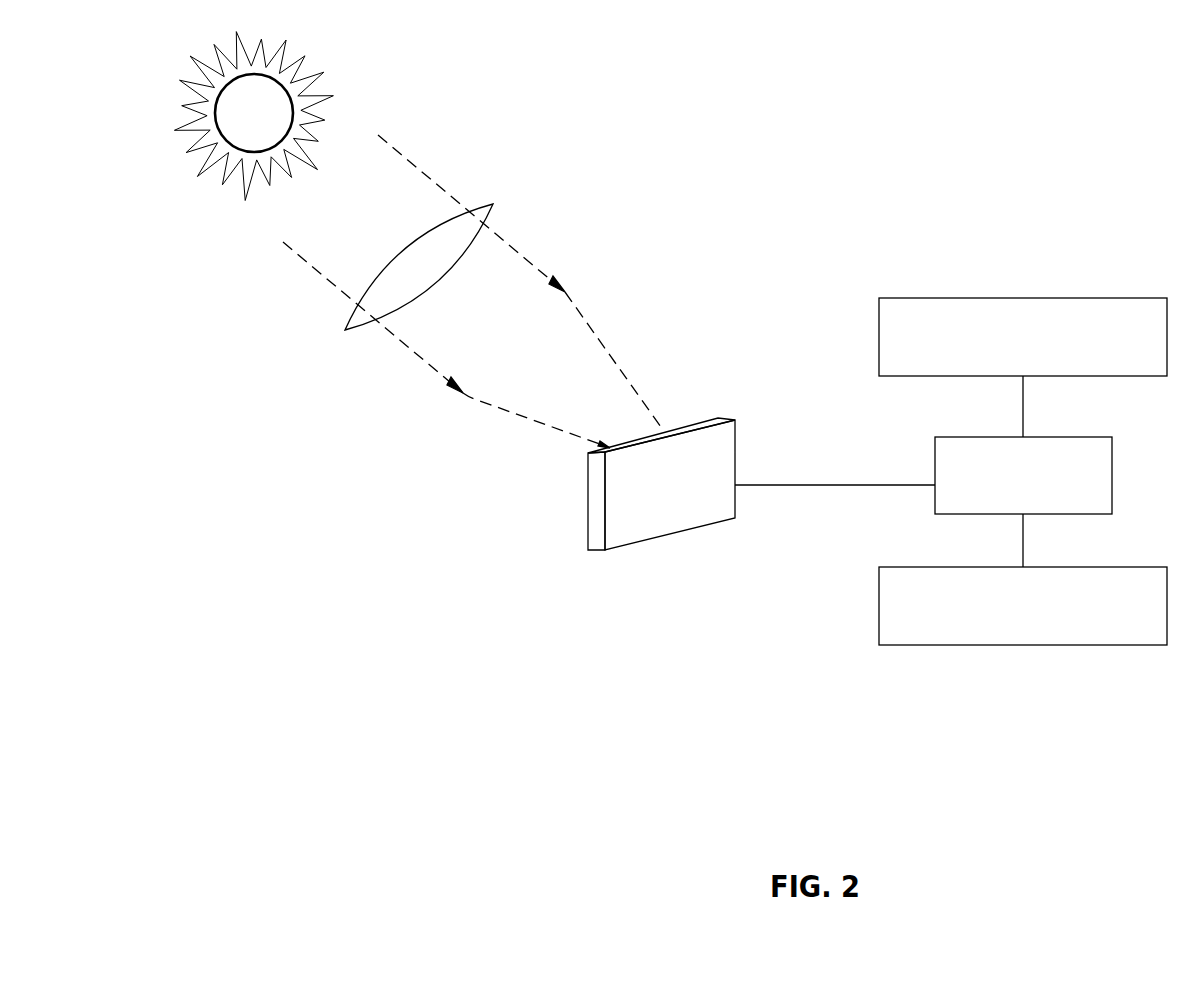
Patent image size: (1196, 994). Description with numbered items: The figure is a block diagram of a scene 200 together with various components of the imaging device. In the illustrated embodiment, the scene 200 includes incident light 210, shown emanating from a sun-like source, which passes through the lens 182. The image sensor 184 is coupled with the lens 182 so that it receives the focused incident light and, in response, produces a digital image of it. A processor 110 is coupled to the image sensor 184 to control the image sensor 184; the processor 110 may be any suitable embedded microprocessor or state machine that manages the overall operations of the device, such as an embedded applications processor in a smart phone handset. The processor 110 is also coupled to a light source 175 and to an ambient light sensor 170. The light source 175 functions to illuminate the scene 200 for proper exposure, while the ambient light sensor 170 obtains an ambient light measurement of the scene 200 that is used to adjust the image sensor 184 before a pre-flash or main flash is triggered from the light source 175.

The scene 200 is at (203, 895).
The incident light 210 is at (310, 263).
The lens 182 is at (419, 267).
The image sensor 184 is at (687, 523).
The light source 175 is at (1042, 360).
The processor 110 is at (1042, 497).
The ambient light sensor 170 is at (1042, 630).